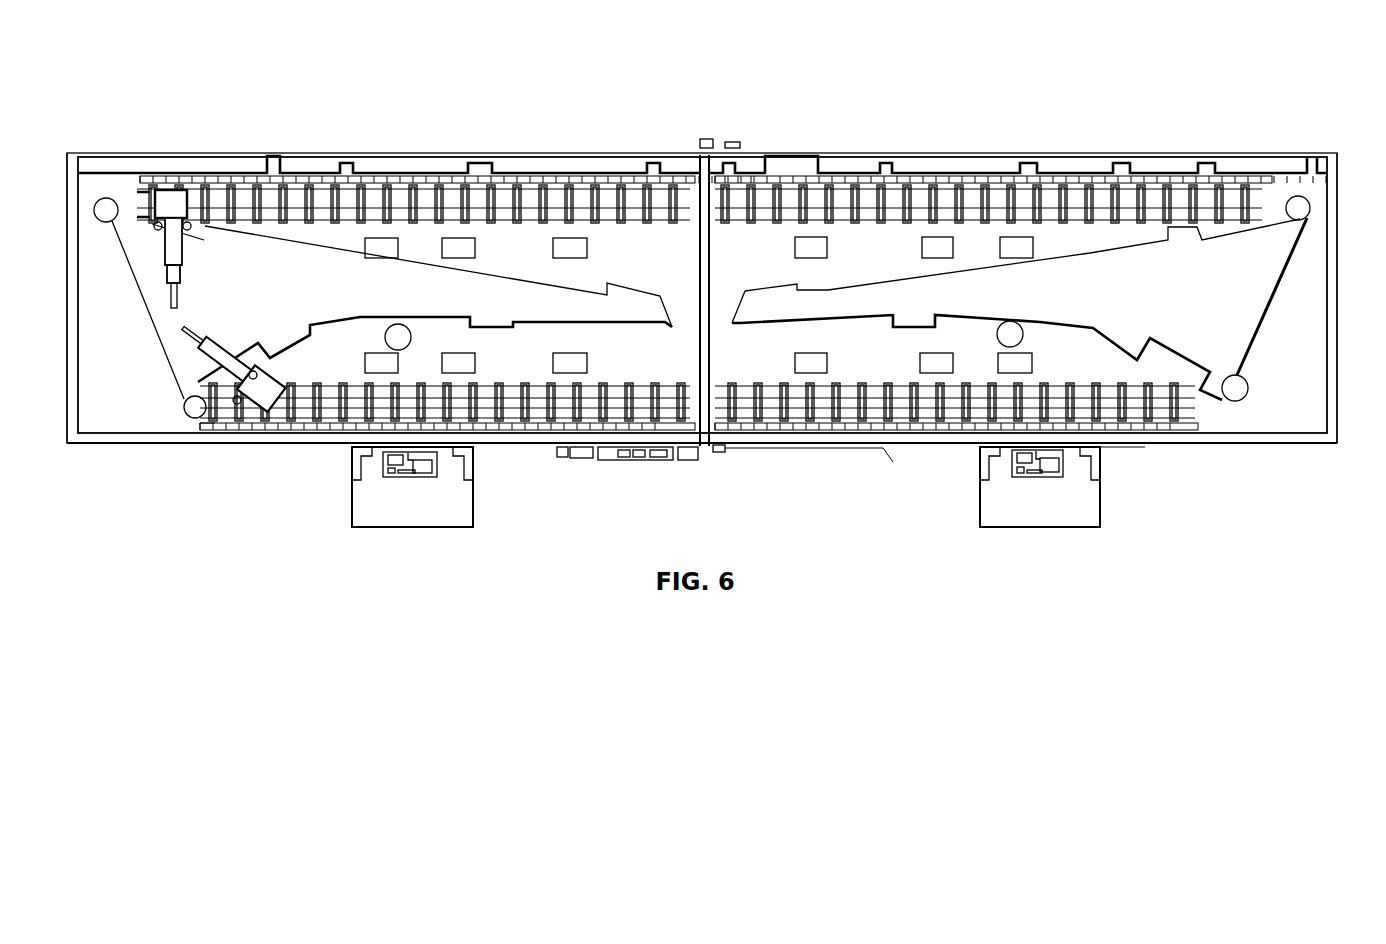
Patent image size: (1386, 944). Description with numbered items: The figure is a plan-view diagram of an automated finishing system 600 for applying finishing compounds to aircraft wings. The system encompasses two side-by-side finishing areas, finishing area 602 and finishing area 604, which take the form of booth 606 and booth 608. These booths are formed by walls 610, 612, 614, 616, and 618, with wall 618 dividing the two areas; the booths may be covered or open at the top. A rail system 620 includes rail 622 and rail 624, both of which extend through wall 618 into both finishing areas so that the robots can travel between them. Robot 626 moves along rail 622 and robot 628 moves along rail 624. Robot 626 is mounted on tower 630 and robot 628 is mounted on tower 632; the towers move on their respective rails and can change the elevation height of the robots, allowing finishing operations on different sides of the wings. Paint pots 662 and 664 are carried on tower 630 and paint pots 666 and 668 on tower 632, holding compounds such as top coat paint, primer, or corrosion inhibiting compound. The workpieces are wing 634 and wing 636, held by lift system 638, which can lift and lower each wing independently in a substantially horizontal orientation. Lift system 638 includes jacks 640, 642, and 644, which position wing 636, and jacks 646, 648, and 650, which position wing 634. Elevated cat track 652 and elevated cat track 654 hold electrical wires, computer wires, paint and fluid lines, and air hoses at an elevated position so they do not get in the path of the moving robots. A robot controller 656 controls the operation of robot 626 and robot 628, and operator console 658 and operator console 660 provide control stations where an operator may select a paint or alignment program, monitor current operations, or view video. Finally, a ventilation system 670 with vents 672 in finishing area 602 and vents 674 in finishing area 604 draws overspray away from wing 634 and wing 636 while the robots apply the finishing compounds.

The automated finishing system 600 is at (1067, 112).
The finishing area 602 is at (630, 368).
The finishing area 604 is at (730, 368).
The booth 606 is at (66, 407).
The booth 608 is at (1145, 447).
The wall 610 is at (540, 446).
The wall 612 is at (66, 185).
The wall 614 is at (940, 156).
The wall 616 is at (1340, 190).
The wall 618 is at (710, 263).
The rail system 620 is at (810, 198).
The rail 622 is at (300, 194).
The rail 624 is at (303, 421).
The robot 626 is at (167, 278).
The robot 628 is at (217, 346).
The tower 630 is at (172, 190).
The tower 632 is at (277, 381).
The wing 634 is at (180, 358).
The wing 636 is at (867, 307).
The lift system 638 is at (1250, 366).
The jack 640 is at (1023, 342).
The jack 642 is at (1249, 390).
The jack 644 is at (1287, 212).
The jack 646 is at (104, 198).
The jack 648 is at (184, 408).
The jack 650 is at (385, 328).
The elevated cat track 652 is at (418, 180).
The elevated cat track 654 is at (203, 428).
The robot controller 656 is at (613, 472).
The operator console 658 is at (378, 538).
The operator console 660 is at (1005, 538).
The paint pot 662 is at (153, 229).
The paint pot 664 is at (191, 228).
The paint pot 666 is at (246, 403).
The paint pot 668 is at (253, 362).
The ventilation system 670 is at (1057, 252).
The vents 672 is at (596, 248).
The vents 674 is at (912, 247).